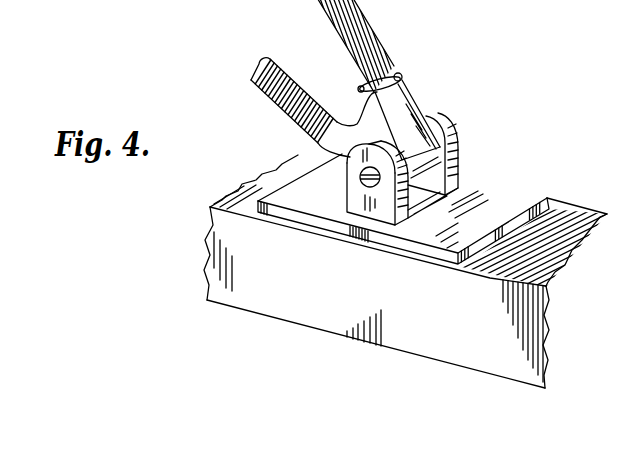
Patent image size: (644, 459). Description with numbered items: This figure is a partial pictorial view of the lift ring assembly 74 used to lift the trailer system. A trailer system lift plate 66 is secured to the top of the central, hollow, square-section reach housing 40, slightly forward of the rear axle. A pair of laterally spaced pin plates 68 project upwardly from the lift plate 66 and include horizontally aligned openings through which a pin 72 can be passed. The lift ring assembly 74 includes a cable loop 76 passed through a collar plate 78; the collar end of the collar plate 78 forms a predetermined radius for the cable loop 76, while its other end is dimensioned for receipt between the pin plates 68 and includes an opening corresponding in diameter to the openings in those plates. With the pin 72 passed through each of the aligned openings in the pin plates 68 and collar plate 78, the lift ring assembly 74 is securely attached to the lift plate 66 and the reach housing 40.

The reach housing 40 is at (338, 318).
The trailer system lift plate 66 is at (510, 197).
The pin plates 68 is at (460, 143).
The pin 72 is at (343, 177).
The lift ring assembly 74 is at (404, 72).
The cable loop 76 is at (360, 20).
The collar plate 78 is at (407, 106).